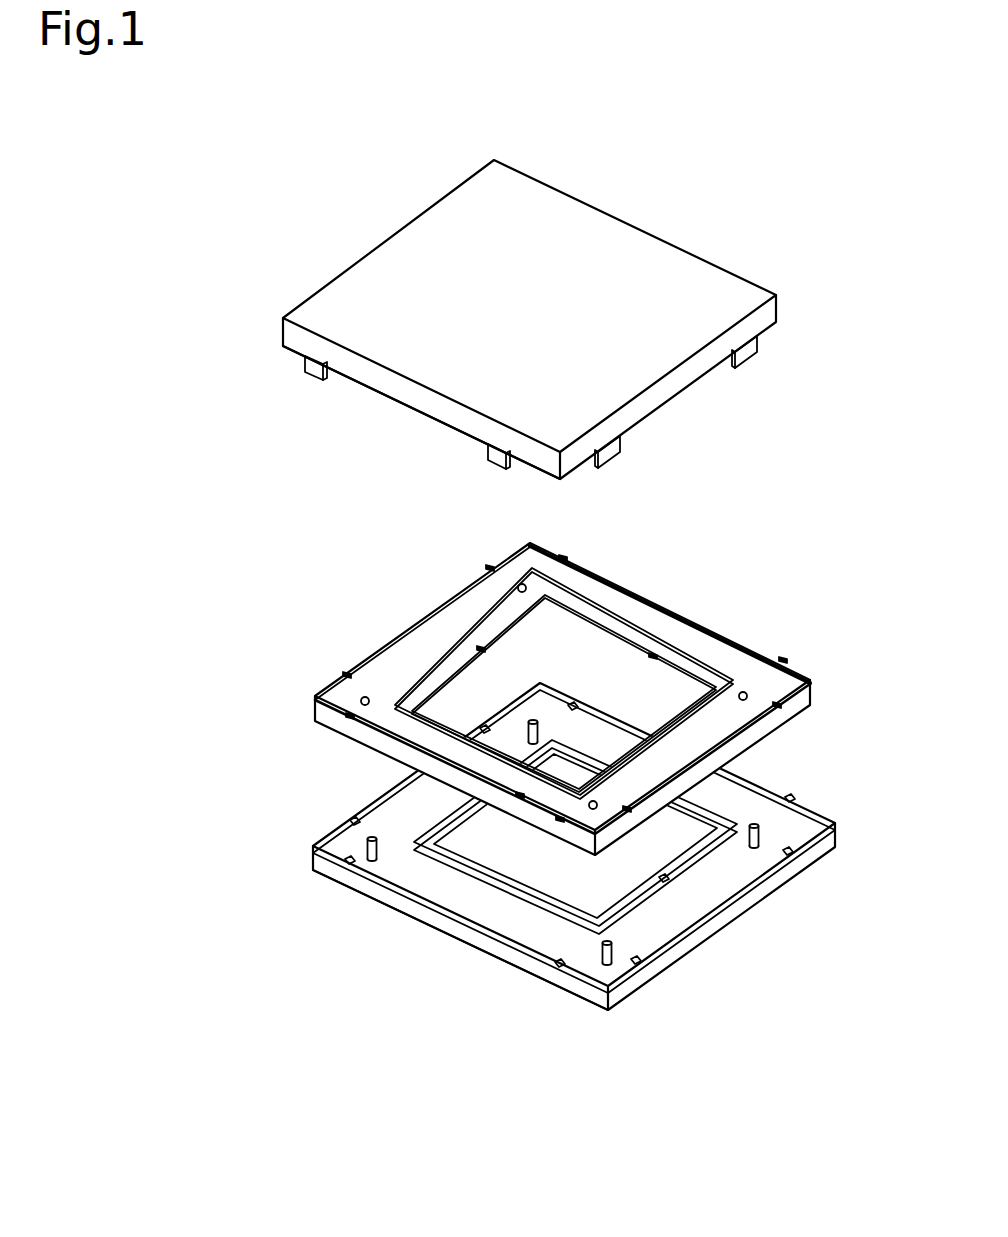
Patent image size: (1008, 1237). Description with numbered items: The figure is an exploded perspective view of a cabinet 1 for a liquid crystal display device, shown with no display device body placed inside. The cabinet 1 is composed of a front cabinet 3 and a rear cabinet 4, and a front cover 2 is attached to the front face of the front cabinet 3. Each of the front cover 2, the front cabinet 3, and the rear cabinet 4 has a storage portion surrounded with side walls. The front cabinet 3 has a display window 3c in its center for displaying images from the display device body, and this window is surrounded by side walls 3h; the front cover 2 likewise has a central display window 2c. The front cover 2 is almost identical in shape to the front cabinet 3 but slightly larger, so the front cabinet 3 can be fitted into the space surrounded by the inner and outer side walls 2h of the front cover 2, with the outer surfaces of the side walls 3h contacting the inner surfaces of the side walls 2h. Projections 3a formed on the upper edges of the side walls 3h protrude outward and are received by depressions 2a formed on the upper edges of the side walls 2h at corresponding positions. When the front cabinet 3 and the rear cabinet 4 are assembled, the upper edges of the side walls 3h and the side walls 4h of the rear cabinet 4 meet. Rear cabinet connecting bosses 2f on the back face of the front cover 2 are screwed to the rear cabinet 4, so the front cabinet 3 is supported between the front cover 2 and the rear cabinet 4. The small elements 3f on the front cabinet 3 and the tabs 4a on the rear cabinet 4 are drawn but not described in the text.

The cabinet 1 is at (855, 964).
The front cover 2 is at (566, 860).
The depressions 2a is at (572, 705).
The display window 2c is at (608, 888).
The rear cabinet connecting bosses 2f is at (530, 722).
The side walls 2h is at (497, 893).
The front cabinet 3 is at (568, 705).
The projections 3a is at (489, 570).
The display window 3c is at (665, 688).
The positioning holes of intermediate frame 3f is at (360, 708).
The side walls 3h is at (407, 757).
The rear cabinet 4 is at (532, 314).
The tabs of cover plate 4a is at (298, 356).
The side walls 4h is at (389, 377).